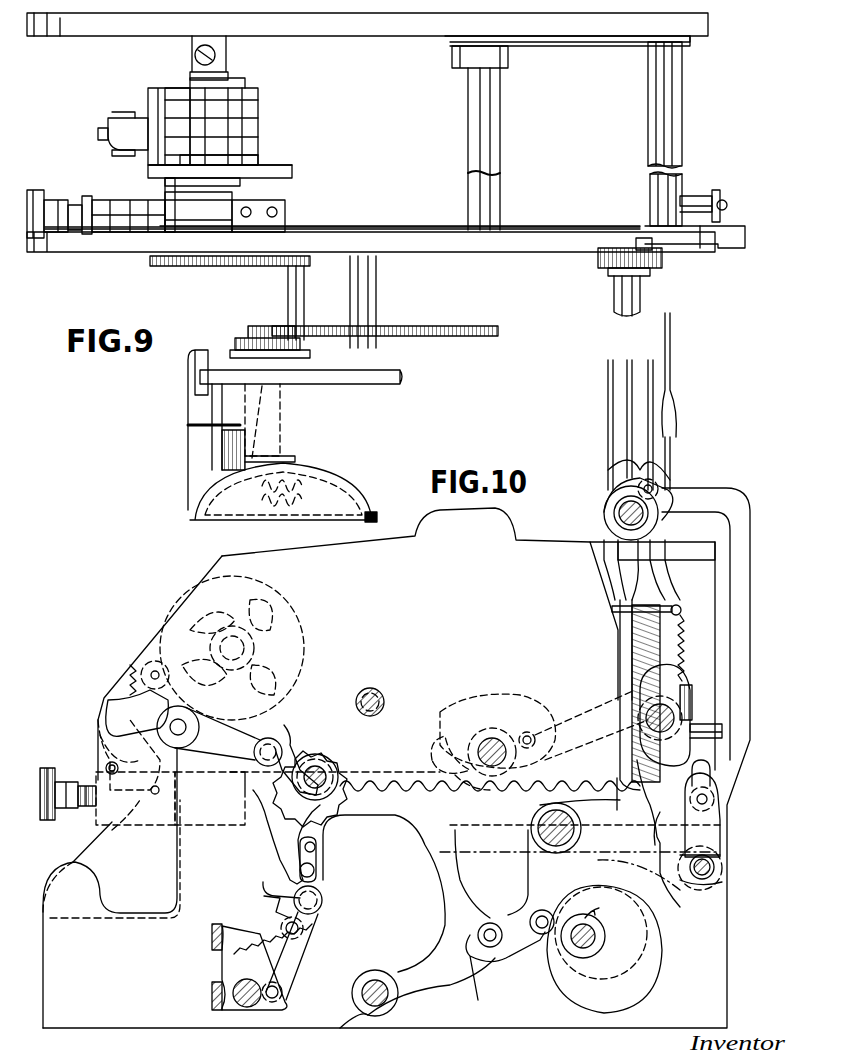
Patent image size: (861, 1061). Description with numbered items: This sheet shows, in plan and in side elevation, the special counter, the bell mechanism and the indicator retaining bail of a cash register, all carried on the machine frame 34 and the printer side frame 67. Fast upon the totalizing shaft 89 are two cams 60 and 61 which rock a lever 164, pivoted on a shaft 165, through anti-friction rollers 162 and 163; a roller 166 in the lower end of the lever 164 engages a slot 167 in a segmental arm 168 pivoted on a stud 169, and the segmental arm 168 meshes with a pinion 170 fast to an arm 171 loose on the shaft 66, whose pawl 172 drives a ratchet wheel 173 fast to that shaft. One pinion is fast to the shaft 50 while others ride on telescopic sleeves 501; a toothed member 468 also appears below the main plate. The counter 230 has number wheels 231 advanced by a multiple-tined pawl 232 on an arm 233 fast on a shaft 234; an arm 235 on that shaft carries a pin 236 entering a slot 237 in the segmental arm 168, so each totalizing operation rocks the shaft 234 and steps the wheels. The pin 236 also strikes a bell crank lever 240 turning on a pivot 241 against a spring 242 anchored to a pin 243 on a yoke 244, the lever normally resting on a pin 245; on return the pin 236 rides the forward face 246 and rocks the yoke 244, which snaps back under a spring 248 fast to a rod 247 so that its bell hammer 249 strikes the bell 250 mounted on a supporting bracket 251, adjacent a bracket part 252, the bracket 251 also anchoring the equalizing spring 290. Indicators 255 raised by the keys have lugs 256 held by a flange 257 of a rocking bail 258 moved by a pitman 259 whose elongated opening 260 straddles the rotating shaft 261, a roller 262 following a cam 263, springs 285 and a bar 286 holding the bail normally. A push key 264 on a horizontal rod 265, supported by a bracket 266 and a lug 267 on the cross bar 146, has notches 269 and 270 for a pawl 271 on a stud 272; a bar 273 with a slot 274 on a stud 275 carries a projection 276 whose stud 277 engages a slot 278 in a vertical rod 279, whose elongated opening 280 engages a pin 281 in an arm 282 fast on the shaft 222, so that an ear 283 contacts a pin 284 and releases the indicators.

In FIG. 9, the machine frame 34 is at (510, 252).
In FIG. 10, the machine frame 34 is at (124, 1030).
In FIG. 10, the shaft 50 is at (364, 698).
In FIG. 10, the telescopic sleeves 501 is at (378, 696).
In FIG. 10, the cam 60 is at (640, 968).
In FIG. 10, the cam 61 is at (555, 886).
In FIG. 10, the shaft 66 is at (338, 768).
In FIG. 9, the printer side frame 67 is at (396, 384).
In FIG. 10, the totalizing shaft 89 is at (586, 948).
In FIG. 9, the cross bar 146 is at (225, 58).
In FIG. 10, the anti-friction roller 162 is at (540, 934).
In FIG. 10, the anti-friction roller 163 is at (650, 876).
In FIG. 10, the lever 164 is at (614, 790).
In FIG. 10, the shaft 165 is at (550, 800).
In FIG. 10, the anti-friction roller 166 is at (516, 922).
In FIG. 10, the slot 167 is at (476, 958).
In FIG. 10, the segmental arm 168 is at (440, 934).
In FIG. 9, the stud 169 is at (380, 296).
In FIG. 10, the stud 169 is at (376, 982).
In FIG. 10, the pinion 170 is at (316, 760).
In FIG. 10, the arm 171 is at (294, 740).
In FIG. 10, the spring controlled pawl 172 is at (270, 740).
In FIG. 10, the ratchet wheel 173 is at (334, 760).
In FIG. 9, the shaft 222 is at (610, 290).
In FIG. 10, the shaft 222 is at (614, 508).
In FIG. 9, the counter 230 is at (272, 122).
In FIG. 10, the counter 230 is at (270, 648).
In FIG. 9, the number wheels 231 is at (262, 150).
In FIG. 9, the multiple-tined pawl 232 is at (155, 120).
In FIG. 10, the multiple-tined pawl 232 is at (155, 650).
In FIG. 9, the arm 233 is at (110, 126).
In FIG. 10, the arm 233 is at (150, 710).
In FIG. 9, the shaft 234 is at (162, 188).
In FIG. 10, the shaft 234 is at (185, 728).
In FIG. 9, the arm 235 is at (236, 268).
In FIG. 10, the arm 235 is at (270, 836).
In FIG. 9, the pin 236 is at (290, 298).
In FIG. 10, the pin 236 is at (316, 878).
In FIG. 10, the slot 237 is at (316, 852).
In FIG. 10, the bell crank lever 240 is at (280, 880).
In FIG. 10, the pivot 241 is at (322, 904).
In FIG. 10, the spring 242 is at (300, 950).
In FIG. 10, the pin 243 is at (280, 992).
In FIG. 10, the yoke 244 is at (236, 958).
In FIG. 10, the pin 245 is at (290, 934).
In FIG. 10, the forward face 246 is at (266, 898).
In FIG. 10, the rod 247 is at (256, 1002).
In FIG. 9, the spring 248 is at (235, 442).
In FIG. 9, the bell hammer 249 is at (374, 512).
In FIG. 9, the bell 250 is at (340, 472).
In FIG. 9, the supporting bracket 251 is at (274, 432).
In FIG. 9, the bracket 252 is at (200, 350).
In FIG. 10, the bracket 252 is at (212, 936).
In FIG. 10, the indicators 255 is at (676, 560).
In FIG. 10, the lug 256 is at (650, 652).
In FIG. 9, the flange 257 is at (650, 186).
In FIG. 10, the flange 257 is at (670, 672).
In FIG. 9, the rocking bail 258 is at (684, 120).
In FIG. 10, the rocking bail 258 is at (690, 735).
In FIG. 9, the pitman 259 is at (590, 48).
In FIG. 10, the pitman 259 is at (578, 710).
In FIG. 10, the elongated opening 260 is at (470, 748).
In FIG. 9, the rotating shaft 261 is at (502, 148).
In FIG. 10, the rotating shaft 261 is at (508, 752).
In FIG. 10, the roller 262 is at (527, 730).
In FIG. 9, the cam 263 is at (518, 50).
In FIG. 10, the cam 263 is at (468, 716).
In FIG. 9, the push key 264 is at (36, 190).
In FIG. 10, the push key 264 is at (44, 760).
In FIG. 9, the horizontal rod 265 is at (62, 200).
In FIG. 10, the horizontal rod 265 is at (72, 782).
In FIG. 9, the bracket 266 is at (88, 196).
In FIG. 10, the bracket 266 is at (96, 806).
In FIG. 10, the lug 267 is at (240, 815).
In FIG. 10, the notch 269 is at (136, 806).
In FIG. 10, the notch 270 is at (156, 796).
In FIG. 10, the spring controlled pawl 271 is at (152, 770).
In FIG. 9, the stud 272 is at (92, 230).
In FIG. 10, the stud 272 is at (108, 762).
In FIG. 9, the bar 273 is at (390, 228).
In FIG. 10, the bar 273 is at (498, 850).
In FIG. 10, the slot 274 is at (716, 866).
In FIG. 10, the stud 275 is at (722, 858).
In FIG. 10, the upwardly extending projection 276 is at (720, 820).
In FIG. 10, the stud 277 is at (714, 800).
In FIG. 10, the slot 278 is at (712, 778).
In FIG. 9, the vertical rod 279 is at (742, 232).
In FIG. 10, the vertical rod 279 is at (740, 590).
In FIG. 10, the elongated opening 280 is at (660, 494).
In FIG. 9, the pin 281 is at (642, 238).
In FIG. 10, the pin 281 is at (650, 486).
In FIG. 9, the arm 282 is at (658, 262).
In FIG. 10, the arm 282 is at (622, 484).
In FIG. 9, the ear 283 is at (722, 192).
In FIG. 10, the ear 283 is at (694, 702).
In FIG. 9, the pin 284 is at (698, 196).
In FIG. 10, the pin 284 is at (724, 728).
In FIG. 10, the spring 285 is at (692, 622).
In FIG. 10, the bar 286 is at (678, 606).
In FIG. 9, the spring 290 is at (312, 502).
In FIG. 9, the rack 468 is at (444, 336).